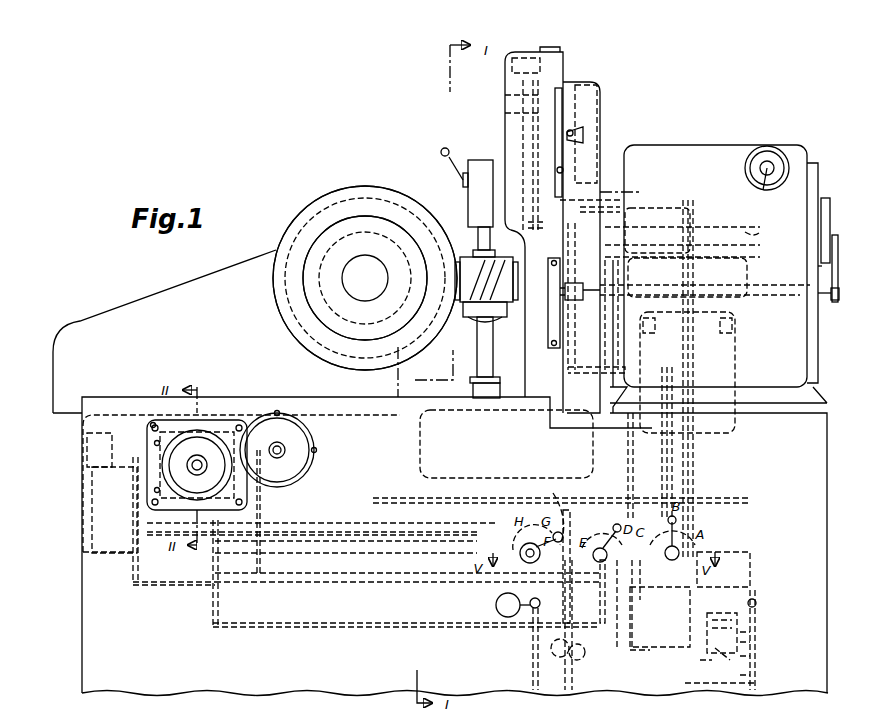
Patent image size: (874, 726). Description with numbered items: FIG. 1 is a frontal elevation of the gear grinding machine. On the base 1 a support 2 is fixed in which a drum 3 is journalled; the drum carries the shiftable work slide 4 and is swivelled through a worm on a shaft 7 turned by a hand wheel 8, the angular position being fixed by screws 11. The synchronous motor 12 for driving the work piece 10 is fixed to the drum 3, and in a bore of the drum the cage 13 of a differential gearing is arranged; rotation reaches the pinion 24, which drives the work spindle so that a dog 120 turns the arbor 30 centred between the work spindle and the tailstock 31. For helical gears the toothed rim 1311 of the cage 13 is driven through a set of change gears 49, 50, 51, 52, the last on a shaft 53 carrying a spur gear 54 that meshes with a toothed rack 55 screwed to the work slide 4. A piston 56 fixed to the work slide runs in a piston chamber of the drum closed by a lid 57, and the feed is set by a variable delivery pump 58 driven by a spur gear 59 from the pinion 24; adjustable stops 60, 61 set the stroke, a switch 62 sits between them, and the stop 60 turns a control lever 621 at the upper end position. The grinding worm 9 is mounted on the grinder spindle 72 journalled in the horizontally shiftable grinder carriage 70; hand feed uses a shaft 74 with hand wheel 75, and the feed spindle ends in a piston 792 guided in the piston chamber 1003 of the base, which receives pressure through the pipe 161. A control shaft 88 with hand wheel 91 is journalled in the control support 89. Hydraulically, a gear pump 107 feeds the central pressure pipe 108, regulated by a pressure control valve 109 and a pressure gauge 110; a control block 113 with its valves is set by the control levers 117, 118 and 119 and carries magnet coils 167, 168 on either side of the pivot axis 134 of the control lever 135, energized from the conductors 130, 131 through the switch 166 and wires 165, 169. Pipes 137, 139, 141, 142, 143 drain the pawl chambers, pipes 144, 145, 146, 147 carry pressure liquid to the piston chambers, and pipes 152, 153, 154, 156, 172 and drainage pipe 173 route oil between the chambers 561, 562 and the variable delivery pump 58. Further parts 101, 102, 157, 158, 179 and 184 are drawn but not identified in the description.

The base 1 is at (821, 447).
The support 2 is at (657, 148).
The drum 3 is at (524, 215).
The work slide 4 is at (505, 128).
The shaft 7 is at (767, 184).
The hand wheel 8 is at (770, 147).
The grinding worm 9 is at (313, 203).
The work piece 10 is at (500, 315).
The screws 11 is at (611, 315).
The motor 12 is at (735, 361).
The cage 13 is at (745, 272).
The pinion 24 is at (596, 362).
The arbor 30 is at (494, 347).
The tailstock 31 is at (468, 204).
The spur gear 49 is at (831, 213).
The spur gear 50 is at (818, 267).
The spur gear 51 is at (838, 266).
The change gear 52 is at (838, 289).
The shaft 53 is at (745, 299).
The spur gear 54 is at (565, 292).
The toothed rack 55 is at (551, 322).
The piston 56 is at (543, 155).
The lid 57 is at (512, 68).
The variable delivery pump 58 is at (586, 212).
The spur gear 59 is at (561, 259).
The adjustable stop 60 is at (564, 169).
The adjustable stop 61 is at (556, 92).
The switch 62 is at (580, 140).
The grinder carriage 70 is at (112, 312).
The grinder spindle 72 is at (366, 258).
The shaft 74 is at (277, 442).
The hand wheel 75 is at (312, 441).
The control shaft 88 is at (197, 465).
The control support 89 is at (150, 426).
The hand wheel 91 is at (213, 424).
The screws 101 is at (154, 444).
The cover plate 102 is at (168, 421).
The gear pump 107 is at (580, 625).
The central pressure pipe 108 is at (505, 95).
The pressure control valve 109 is at (584, 566).
The pressure gauge 110 is at (496, 606).
The control block 113 is at (662, 580).
The control lever 117 is at (680, 524).
The lever 118 is at (611, 543).
The lever 119 is at (547, 513).
The dog 120 is at (500, 380).
The conductor 130 is at (755, 678).
The conductor 131 is at (688, 683).
The pivot axis 134 is at (760, 613).
The control lever 135 is at (710, 614).
The pipe 137 is at (324, 530).
The pipe 139 is at (252, 622).
The pipe 141 is at (202, 553).
The pipe 142 is at (133, 537).
The pipe 143 is at (236, 553).
The pipe 144 is at (318, 594).
The pipe 145 is at (250, 507).
The pipe 146 is at (203, 586).
The pipe 147 is at (133, 496).
The pipe 152 is at (676, 212).
The pipe 153 is at (655, 210).
The pipe 154 is at (723, 569).
The pipe 156 is at (530, 221).
The knob 157 is at (756, 600).
The valve 158 is at (760, 662).
The pipe 161 is at (385, 530).
The wire 165 is at (770, 648).
The switch 166 is at (770, 634).
The magnet coil 167 is at (708, 628).
The magnet coil 168 is at (728, 661).
The wire 169 is at (707, 665).
The pipe 172 is at (642, 652).
The drainage pipe 173 is at (660, 617).
The gear 179 is at (540, 603).
The shaft 184 is at (638, 605).
The chamber 561 is at (505, 113).
The chamber 562 is at (523, 152).
The control lever 621 is at (584, 133).
The piston 792 is at (114, 510).
The piston chamber 1003 is at (83, 447).
The toothed rim 1311 is at (641, 259).